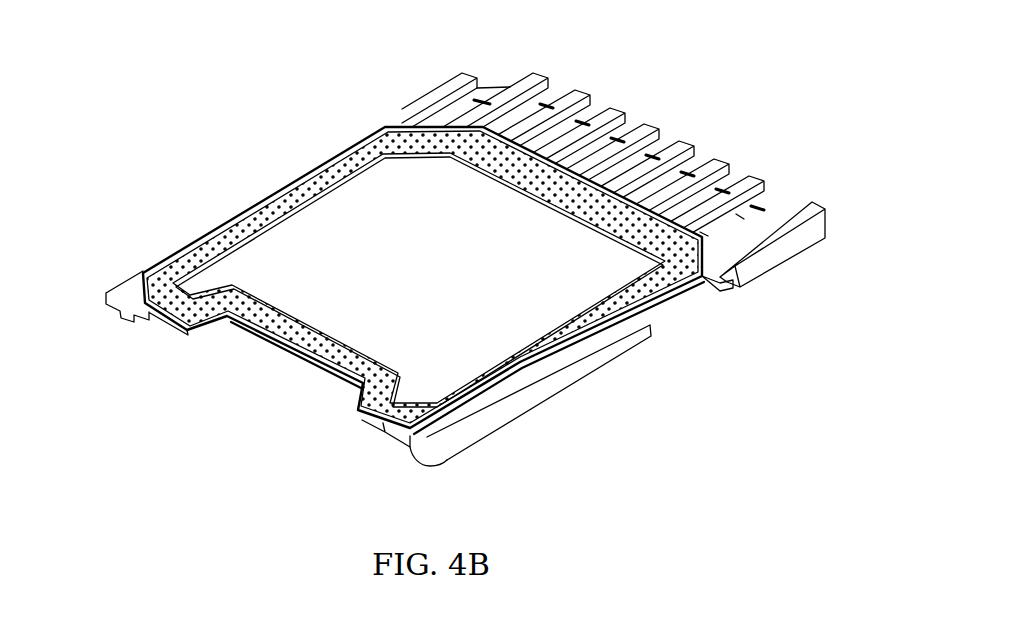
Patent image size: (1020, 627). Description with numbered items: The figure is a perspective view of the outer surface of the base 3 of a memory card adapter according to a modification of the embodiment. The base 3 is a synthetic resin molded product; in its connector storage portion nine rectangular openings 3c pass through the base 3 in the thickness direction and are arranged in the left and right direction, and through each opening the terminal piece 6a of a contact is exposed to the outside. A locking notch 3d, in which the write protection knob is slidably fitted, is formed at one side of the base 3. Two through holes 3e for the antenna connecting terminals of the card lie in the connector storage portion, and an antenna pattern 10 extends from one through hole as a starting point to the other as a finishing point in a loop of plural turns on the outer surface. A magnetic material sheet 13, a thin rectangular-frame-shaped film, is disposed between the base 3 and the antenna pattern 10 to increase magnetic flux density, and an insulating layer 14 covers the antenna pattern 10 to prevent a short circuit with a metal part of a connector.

The base 3 is at (181, 241).
The antenna pattern 10 is at (307, 167).
The through holes 3e is at (562, 187).
The rectangular openings 3c is at (780, 217).
The terminal piece 6a is at (741, 219).
The locking notch 3d is at (680, 306).
The insulating layer 14 is at (175, 323).
The magnetic material sheet 13 is at (413, 438).